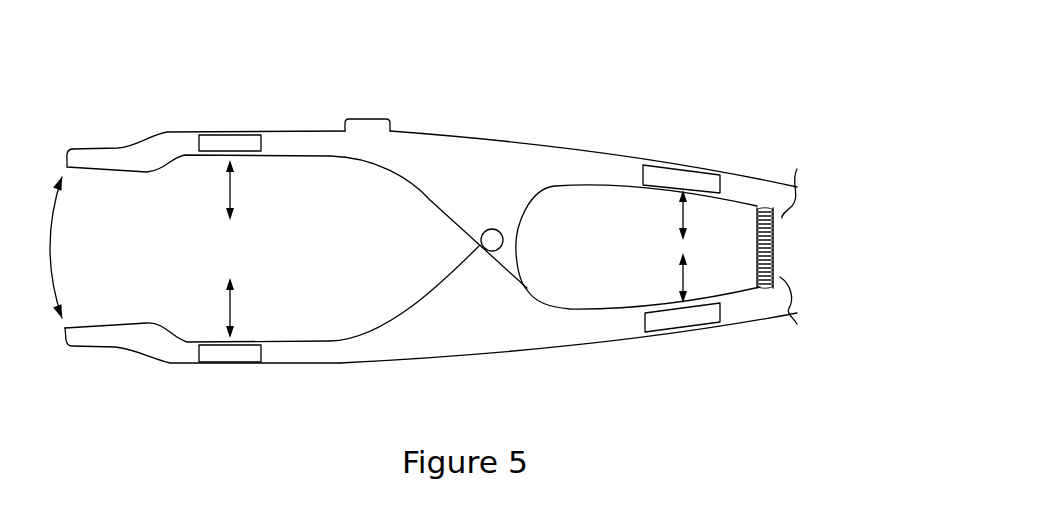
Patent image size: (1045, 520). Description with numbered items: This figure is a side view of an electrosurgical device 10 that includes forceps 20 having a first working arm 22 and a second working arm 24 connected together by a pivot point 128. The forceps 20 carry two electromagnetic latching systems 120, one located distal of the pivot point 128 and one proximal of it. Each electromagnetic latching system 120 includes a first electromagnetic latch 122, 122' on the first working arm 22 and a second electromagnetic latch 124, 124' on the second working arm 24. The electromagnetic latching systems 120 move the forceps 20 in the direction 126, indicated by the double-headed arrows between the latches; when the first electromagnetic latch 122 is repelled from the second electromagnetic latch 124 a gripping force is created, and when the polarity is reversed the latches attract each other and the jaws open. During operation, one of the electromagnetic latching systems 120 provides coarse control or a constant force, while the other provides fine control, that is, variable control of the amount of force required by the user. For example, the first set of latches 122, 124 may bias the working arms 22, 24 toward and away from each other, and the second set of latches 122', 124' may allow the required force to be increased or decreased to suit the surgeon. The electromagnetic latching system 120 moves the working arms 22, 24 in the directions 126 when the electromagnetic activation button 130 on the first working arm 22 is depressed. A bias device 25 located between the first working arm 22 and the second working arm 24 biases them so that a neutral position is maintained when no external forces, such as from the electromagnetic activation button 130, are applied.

The electrosurgical device 10 is at (692, 70).
The forceps 20 is at (422, 88).
The first working arm 22 is at (163, 145).
The second working arm 24 is at (162, 355).
The bias device 25 is at (772, 257).
The electromagnetic latching system 120 is at (264, 386).
The first electromagnetic latch 122 is at (230, 98).
The first electromagnetic latch 122' is at (689, 138).
The second electromagnetic latch 124 is at (230, 396).
The second electromagnetic latch 124' is at (682, 359).
The direction 126 is at (226, 192).
The pivot point 128 is at (491, 238).
The electromagnetic activation button 130 is at (349, 115).